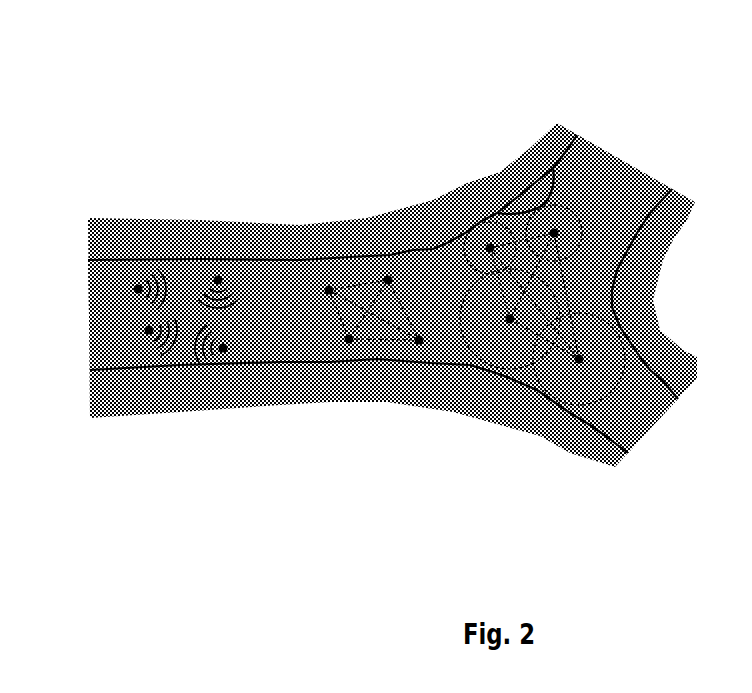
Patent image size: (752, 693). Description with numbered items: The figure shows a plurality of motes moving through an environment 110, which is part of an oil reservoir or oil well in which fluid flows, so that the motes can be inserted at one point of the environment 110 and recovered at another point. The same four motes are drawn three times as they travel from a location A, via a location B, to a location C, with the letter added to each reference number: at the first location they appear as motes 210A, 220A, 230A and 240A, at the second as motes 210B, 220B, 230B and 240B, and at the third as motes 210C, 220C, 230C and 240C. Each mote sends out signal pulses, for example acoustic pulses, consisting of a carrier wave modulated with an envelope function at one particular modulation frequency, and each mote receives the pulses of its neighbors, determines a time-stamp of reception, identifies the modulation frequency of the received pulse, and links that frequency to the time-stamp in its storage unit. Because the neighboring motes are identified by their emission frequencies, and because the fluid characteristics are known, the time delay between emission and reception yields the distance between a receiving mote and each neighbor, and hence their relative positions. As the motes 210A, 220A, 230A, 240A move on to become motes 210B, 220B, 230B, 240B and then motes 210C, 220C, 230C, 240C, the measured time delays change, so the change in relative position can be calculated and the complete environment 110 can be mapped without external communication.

The environment 110 is at (572, 69).
The mote at location A 210A is at (138, 289).
The mote at location A 220A is at (218, 280).
The mote at location A 230A is at (149, 330).
The mote at location A 240A is at (223, 348).
The mote at location B 210B is at (329, 289).
The mote at location B 220B is at (388, 280).
The mote at location B 230B is at (349, 339).
The mote at location B 240B is at (419, 340).
The mote at location C 210C is at (490, 248).
The mote at location C 220C is at (554, 233).
The mote at location C 230C is at (510, 319).
The mote at location C 240C is at (579, 359).